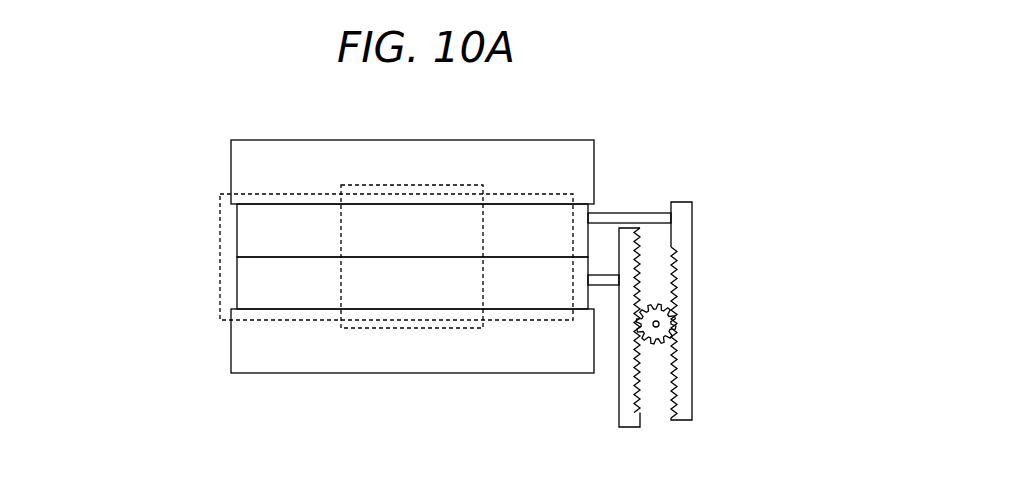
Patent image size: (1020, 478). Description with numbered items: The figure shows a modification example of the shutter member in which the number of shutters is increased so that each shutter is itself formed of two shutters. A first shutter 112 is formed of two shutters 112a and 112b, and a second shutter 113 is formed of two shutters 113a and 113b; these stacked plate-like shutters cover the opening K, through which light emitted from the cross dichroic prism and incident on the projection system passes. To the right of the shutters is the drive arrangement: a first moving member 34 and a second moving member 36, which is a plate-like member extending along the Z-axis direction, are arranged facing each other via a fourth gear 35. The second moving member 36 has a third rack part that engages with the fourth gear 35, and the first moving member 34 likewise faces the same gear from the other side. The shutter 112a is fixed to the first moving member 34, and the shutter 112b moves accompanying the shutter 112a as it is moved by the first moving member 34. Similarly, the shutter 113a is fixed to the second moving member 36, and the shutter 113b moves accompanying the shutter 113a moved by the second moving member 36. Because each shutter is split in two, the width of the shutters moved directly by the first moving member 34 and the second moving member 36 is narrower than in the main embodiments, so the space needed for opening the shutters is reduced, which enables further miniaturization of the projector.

The opening K is at (353, 185).
The first shutter 112 is at (327, 198).
The shutter 112a is at (357, 230).
The shutter 112b is at (247, 167).
The second shutter 113 is at (327, 315).
The shutter 113a is at (247, 284).
The shutter 113b is at (360, 341).
The first moving member 34 is at (702, 228).
The fourth gear 35 is at (670, 318).
The second moving member 36 is at (648, 419).